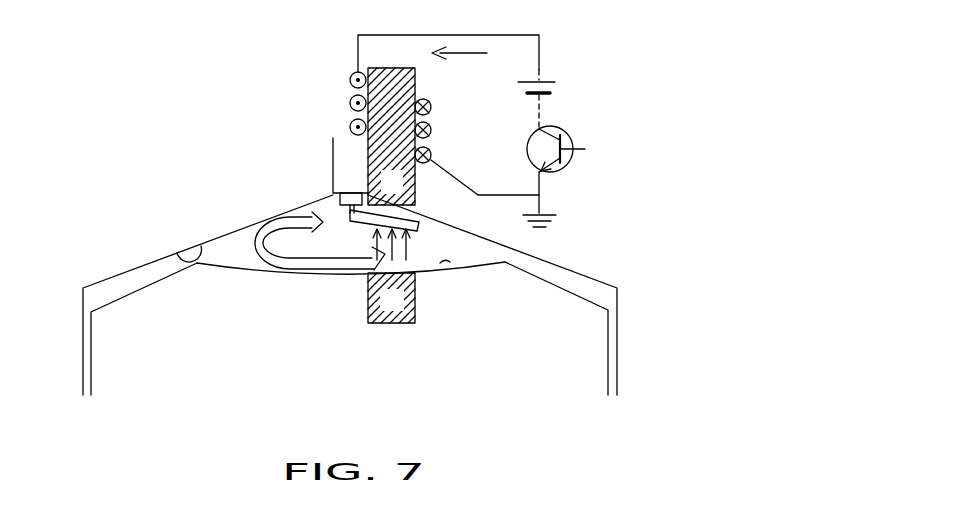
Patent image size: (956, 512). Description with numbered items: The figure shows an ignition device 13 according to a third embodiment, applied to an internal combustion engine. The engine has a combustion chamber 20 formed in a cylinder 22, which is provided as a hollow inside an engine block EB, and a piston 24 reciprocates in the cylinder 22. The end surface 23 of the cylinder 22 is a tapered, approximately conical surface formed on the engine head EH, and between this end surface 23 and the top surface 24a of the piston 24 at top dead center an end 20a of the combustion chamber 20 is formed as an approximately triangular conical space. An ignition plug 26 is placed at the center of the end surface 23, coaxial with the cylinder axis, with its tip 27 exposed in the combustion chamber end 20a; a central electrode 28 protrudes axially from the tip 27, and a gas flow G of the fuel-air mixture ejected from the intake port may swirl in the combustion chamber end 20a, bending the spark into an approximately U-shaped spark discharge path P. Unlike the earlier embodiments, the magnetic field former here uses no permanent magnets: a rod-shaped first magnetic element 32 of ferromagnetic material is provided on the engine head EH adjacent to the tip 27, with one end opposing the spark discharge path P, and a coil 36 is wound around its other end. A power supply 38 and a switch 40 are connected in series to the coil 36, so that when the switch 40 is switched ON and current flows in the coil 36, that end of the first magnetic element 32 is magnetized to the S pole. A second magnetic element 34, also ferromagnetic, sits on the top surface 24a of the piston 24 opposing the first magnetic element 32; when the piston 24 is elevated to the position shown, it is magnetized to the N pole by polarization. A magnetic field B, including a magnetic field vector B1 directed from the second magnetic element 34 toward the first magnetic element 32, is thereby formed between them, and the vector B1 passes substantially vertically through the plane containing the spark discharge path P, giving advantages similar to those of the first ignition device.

The ignition device 13 is at (187, 120).
The combustion chamber 20 is at (130, 280).
The end of the combustion chamber 20a is at (490, 250).
The cylinder 22 is at (86, 310).
The end surface of the cylinder 23 is at (177, 252).
The piston 24 is at (455, 386).
The top surface of the piston 24a is at (450, 264).
The ignition plug 26 is at (333, 160).
The tip of the ignition plug 27 is at (318, 202).
The central electrode 28 is at (340, 213).
The first magnetic element 32 is at (416, 76).
The second magnetic element 34 is at (368, 300).
The coil 36 is at (350, 79).
The power supply 38 is at (556, 88).
The switch 40 is at (569, 137).
The gas flow G is at (253, 247).
The spark discharge path P is at (424, 220).
The magnetic field B is at (422, 242).
The magnetic field vector B1 is at (405, 253).
The engine head EH is at (258, 208).
The engine block EB is at (66, 375).